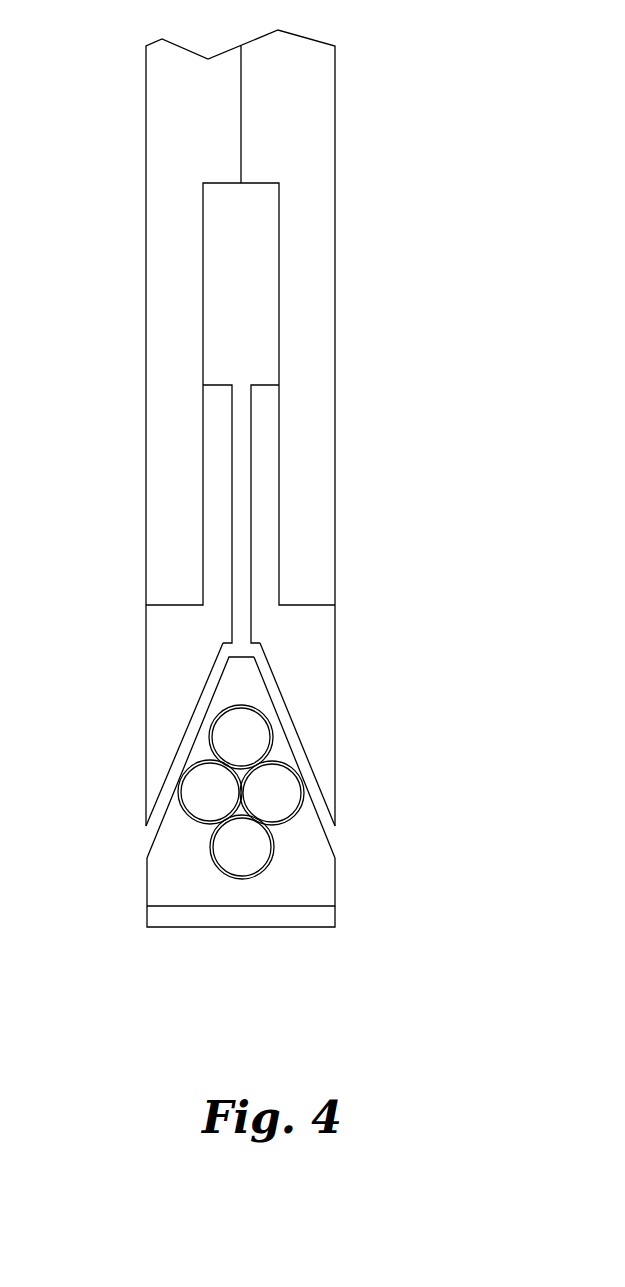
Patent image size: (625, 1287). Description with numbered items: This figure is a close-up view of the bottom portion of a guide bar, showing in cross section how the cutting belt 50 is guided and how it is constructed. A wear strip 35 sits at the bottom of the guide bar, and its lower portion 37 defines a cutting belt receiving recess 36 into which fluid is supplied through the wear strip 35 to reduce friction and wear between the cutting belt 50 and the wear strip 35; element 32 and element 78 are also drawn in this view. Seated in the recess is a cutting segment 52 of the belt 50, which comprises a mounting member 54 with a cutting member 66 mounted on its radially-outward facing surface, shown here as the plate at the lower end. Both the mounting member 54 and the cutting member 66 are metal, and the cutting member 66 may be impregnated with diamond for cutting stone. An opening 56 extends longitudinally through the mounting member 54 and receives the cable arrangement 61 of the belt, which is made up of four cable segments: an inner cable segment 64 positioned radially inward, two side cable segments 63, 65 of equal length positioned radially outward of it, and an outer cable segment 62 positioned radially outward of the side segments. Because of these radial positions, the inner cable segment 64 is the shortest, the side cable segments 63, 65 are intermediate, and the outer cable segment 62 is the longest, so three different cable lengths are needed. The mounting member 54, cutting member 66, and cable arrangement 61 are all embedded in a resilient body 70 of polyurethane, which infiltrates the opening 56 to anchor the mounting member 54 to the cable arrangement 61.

The elongate shaft 32 is at (377, 283).
The wear strip 35 is at (163, 628).
The cutting belt receiving recess 36 is at (178, 757).
The lower portion 37 is at (123, 670).
The cutting belt 50 is at (269, 784).
The cutting segment 52 is at (137, 865).
The mounting member 54 is at (320, 889).
The opening 56 is at (265, 700).
The cable arrangement 61 is at (280, 752).
The outer cable segment 62 is at (257, 844).
The side cable segment 63 is at (210, 792).
The inner cable segment 64 is at (252, 735).
The side cable segment 65 is at (277, 802).
The cutting member 66 is at (187, 920).
The resilient body 70 is at (147, 888).
The funnel wall 78 is at (263, 667).